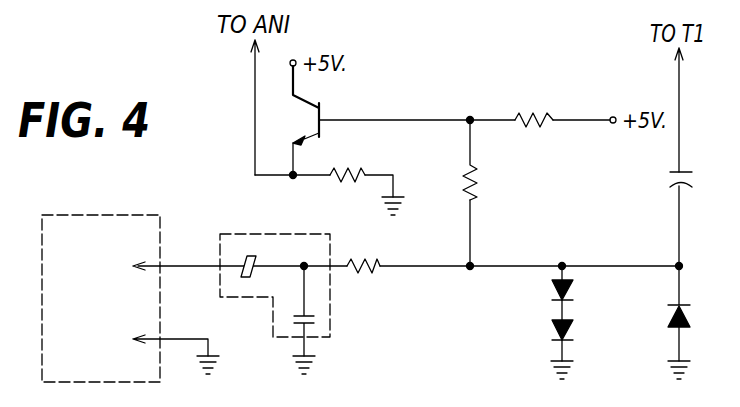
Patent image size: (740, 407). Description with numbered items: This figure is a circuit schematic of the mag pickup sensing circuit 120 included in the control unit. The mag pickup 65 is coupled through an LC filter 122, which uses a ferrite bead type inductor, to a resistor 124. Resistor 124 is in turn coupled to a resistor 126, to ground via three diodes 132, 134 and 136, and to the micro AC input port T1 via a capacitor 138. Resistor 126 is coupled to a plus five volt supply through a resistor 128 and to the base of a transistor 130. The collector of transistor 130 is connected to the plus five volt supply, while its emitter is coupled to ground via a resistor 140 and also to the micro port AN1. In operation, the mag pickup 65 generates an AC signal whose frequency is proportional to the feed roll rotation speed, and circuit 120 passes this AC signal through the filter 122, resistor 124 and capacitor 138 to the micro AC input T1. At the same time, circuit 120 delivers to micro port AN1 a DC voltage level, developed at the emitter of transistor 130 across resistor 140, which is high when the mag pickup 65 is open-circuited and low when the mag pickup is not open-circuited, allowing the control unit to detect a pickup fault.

The mag pickup 65 is at (110, 215).
The circuit 120 is at (455, 49).
The LC filter 122 is at (260, 298).
The resistor 124 is at (366, 273).
The resistor 126 is at (481, 192).
The resistor 128 is at (545, 118).
The transistor 130 is at (319, 120).
The diode 132 is at (550, 287).
The diode 134 is at (550, 327).
The diode 136 is at (672, 320).
The capacitor 138 is at (676, 171).
The resistor 140 is at (357, 172).